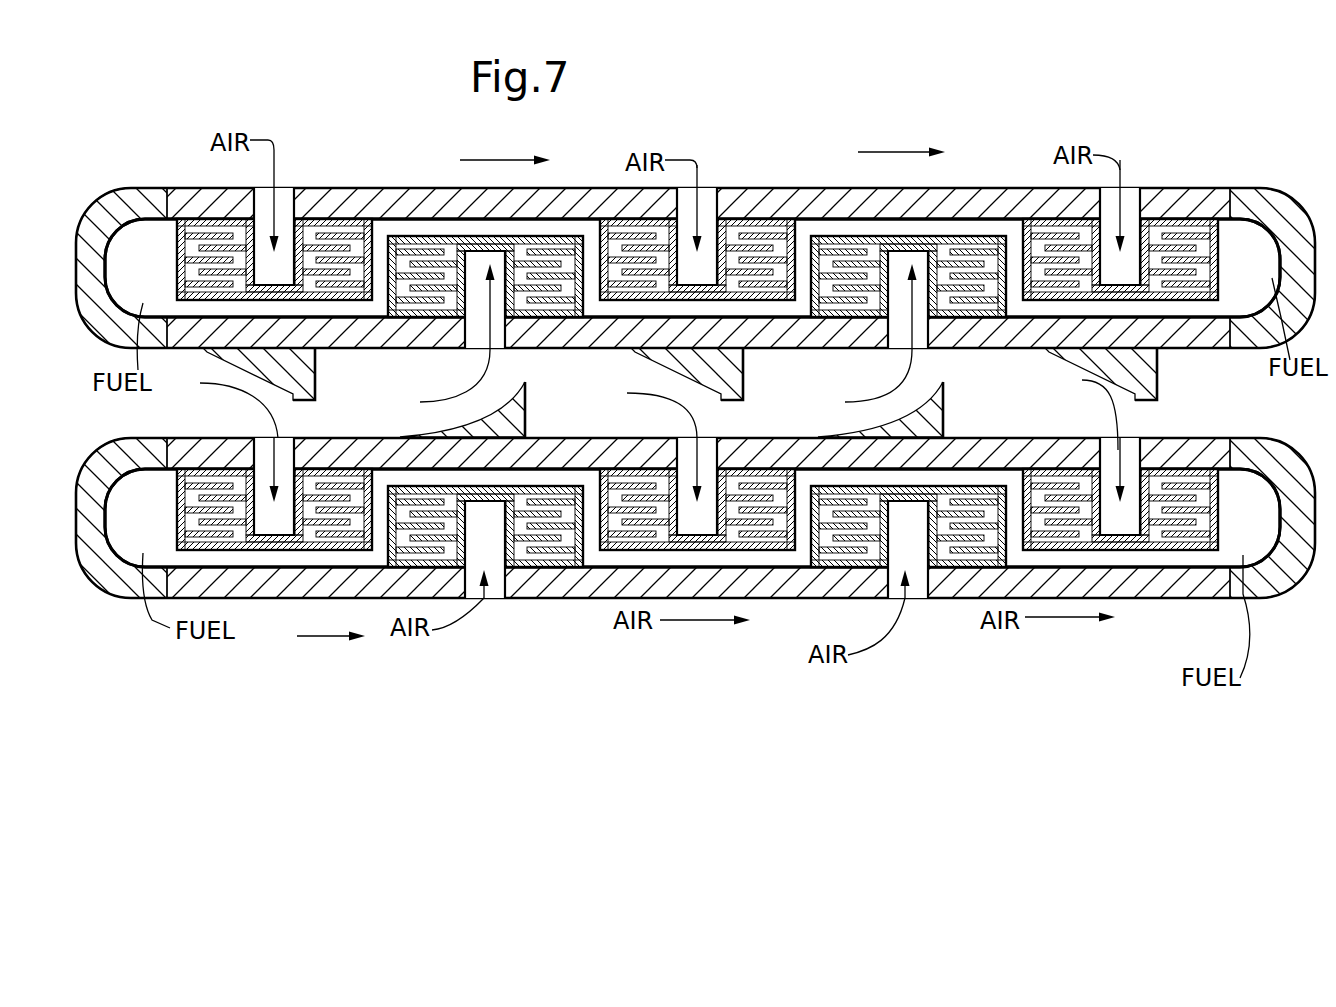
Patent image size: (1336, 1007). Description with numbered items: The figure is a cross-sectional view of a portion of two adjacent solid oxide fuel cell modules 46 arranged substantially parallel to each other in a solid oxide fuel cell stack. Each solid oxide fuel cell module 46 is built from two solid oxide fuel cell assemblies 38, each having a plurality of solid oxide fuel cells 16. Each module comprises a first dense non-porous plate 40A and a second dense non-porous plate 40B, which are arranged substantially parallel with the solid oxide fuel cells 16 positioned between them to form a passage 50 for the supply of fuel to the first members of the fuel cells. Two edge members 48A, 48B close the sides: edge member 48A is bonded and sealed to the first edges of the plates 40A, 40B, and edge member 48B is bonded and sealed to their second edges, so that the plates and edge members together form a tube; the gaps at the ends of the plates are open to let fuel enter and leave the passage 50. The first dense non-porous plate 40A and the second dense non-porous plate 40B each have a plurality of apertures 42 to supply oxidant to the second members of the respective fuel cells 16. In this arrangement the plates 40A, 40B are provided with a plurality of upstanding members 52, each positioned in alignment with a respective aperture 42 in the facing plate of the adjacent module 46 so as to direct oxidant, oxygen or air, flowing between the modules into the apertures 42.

The solid oxide fuel cell 16 is at (335, 316).
The solid oxide fuel cell assembly 38 is at (790, 172).
The first dense non-porous plate 40A is at (997, 187).
The second dense non-porous plate 40B is at (1028, 330).
The aperture 42 is at (299, 208).
The solid oxide fuel cell module 46 is at (1250, 178).
The edge member 48A is at (118, 188).
The edge member 48B is at (1286, 188).
The passage 50 is at (1245, 278).
The upstanding member 52 is at (316, 402).